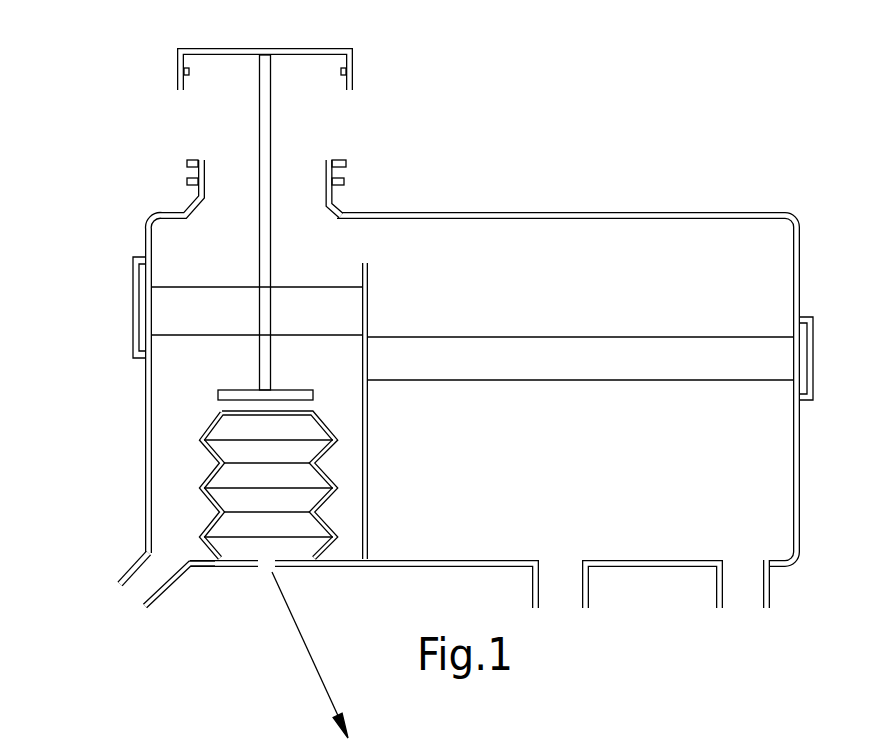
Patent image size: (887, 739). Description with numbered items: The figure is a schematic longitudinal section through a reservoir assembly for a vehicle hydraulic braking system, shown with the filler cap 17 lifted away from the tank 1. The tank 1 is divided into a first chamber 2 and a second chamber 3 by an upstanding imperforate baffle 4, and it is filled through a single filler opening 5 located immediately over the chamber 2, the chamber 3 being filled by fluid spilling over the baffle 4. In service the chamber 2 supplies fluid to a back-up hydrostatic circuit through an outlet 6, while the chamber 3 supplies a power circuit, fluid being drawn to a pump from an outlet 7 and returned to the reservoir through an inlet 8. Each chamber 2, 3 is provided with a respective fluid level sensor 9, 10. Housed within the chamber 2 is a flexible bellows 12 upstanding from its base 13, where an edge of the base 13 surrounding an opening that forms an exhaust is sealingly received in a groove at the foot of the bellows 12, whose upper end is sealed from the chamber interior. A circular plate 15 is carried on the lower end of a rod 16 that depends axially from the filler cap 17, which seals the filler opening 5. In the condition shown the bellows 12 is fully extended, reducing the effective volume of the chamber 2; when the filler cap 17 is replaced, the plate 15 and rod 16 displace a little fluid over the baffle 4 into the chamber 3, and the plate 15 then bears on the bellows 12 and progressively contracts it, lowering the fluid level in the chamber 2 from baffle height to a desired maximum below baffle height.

The tank 1 is at (623, 210).
The first chamber 2 is at (162, 428).
The second chamber 3 is at (762, 455).
The upstanding imperforate baffle 4 is at (370, 487).
The filler opening 5 is at (337, 192).
The outlet 6 is at (145, 582).
The outlet 7 is at (558, 582).
The inlet 8 is at (742, 587).
The fluid level sensor 9 is at (142, 335).
The fluid level sensor 10 is at (813, 370).
The flexible bellows 12 is at (248, 500).
The base 13 is at (202, 567).
The circular plate 15 is at (292, 393).
The rod 16 is at (258, 165).
The filler cap 17 is at (322, 48).